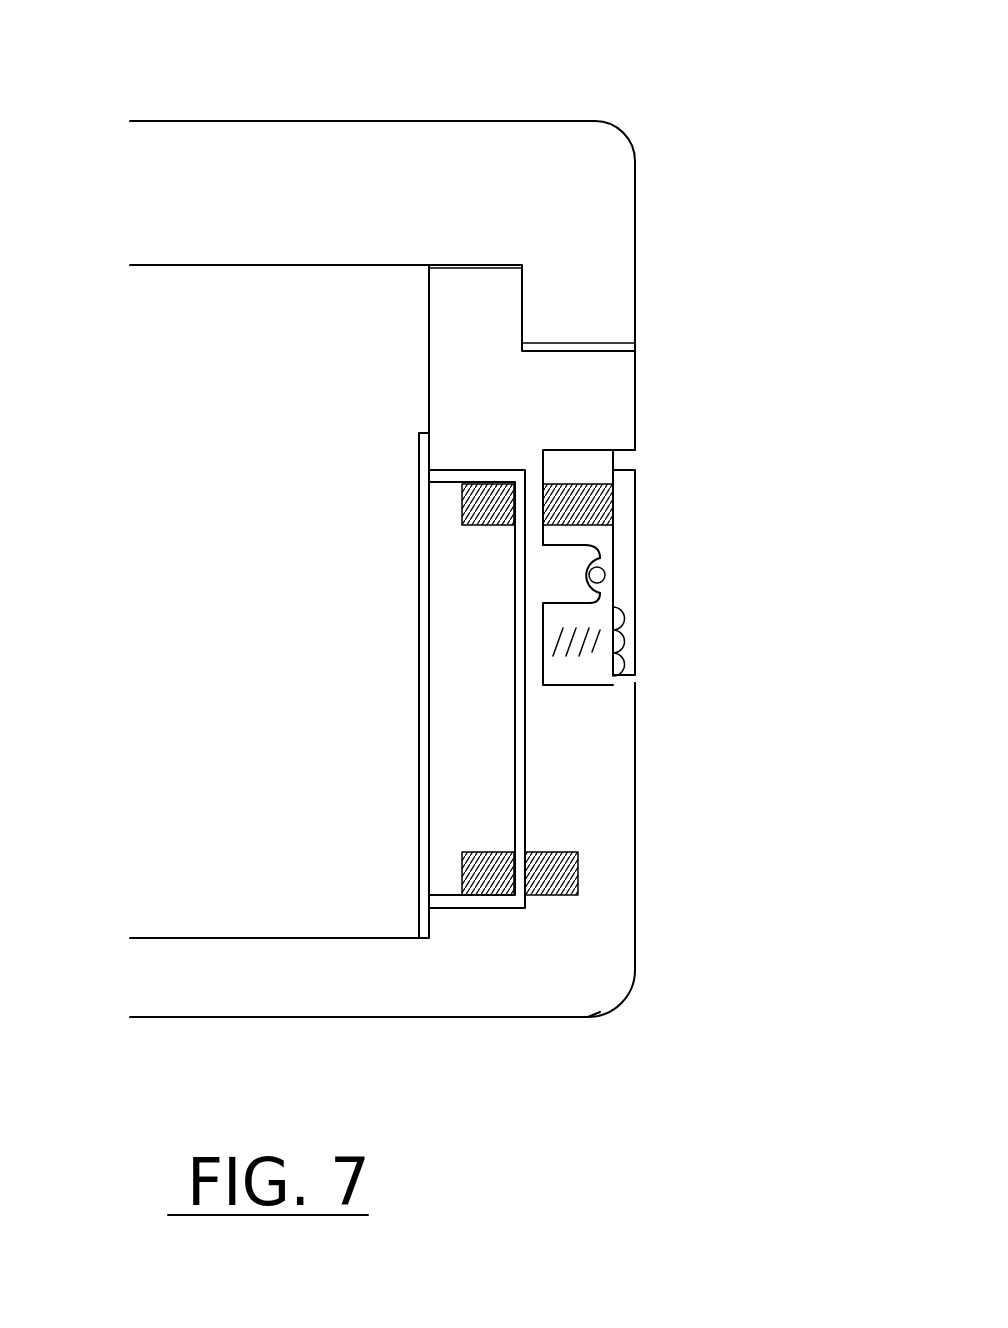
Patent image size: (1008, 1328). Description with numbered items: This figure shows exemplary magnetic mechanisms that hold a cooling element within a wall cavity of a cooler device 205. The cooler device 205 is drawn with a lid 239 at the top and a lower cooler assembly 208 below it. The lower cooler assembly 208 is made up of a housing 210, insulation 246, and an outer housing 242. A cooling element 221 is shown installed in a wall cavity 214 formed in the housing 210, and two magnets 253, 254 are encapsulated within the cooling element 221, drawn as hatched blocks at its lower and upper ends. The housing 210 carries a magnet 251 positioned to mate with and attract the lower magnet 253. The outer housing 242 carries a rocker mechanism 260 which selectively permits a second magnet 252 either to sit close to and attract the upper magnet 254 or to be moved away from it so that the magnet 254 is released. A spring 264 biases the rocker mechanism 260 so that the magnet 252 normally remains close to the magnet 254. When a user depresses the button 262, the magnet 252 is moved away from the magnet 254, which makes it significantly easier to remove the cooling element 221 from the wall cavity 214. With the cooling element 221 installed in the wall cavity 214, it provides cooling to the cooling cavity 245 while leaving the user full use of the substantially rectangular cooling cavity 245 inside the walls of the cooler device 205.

The cooler device 205 is at (725, 98).
The lid 239 is at (413, 122).
The outer housing 242 is at (637, 928).
The housing 210 is at (291, 941).
The lower cooler assembly 208 is at (615, 1004).
The wall cavity 214 is at (528, 830).
The cooling element 221 is at (518, 780).
The magnet 254 is at (490, 480).
The magnet 252 is at (590, 480).
The rocker mechanism 260 is at (622, 574).
The spring 264 is at (595, 632).
The button 262 is at (643, 660).
The magnet 253 is at (493, 878).
The magnet 251 is at (580, 872).
The insulation 246 is at (556, 968).
The cooling cavity 245 is at (265, 793).